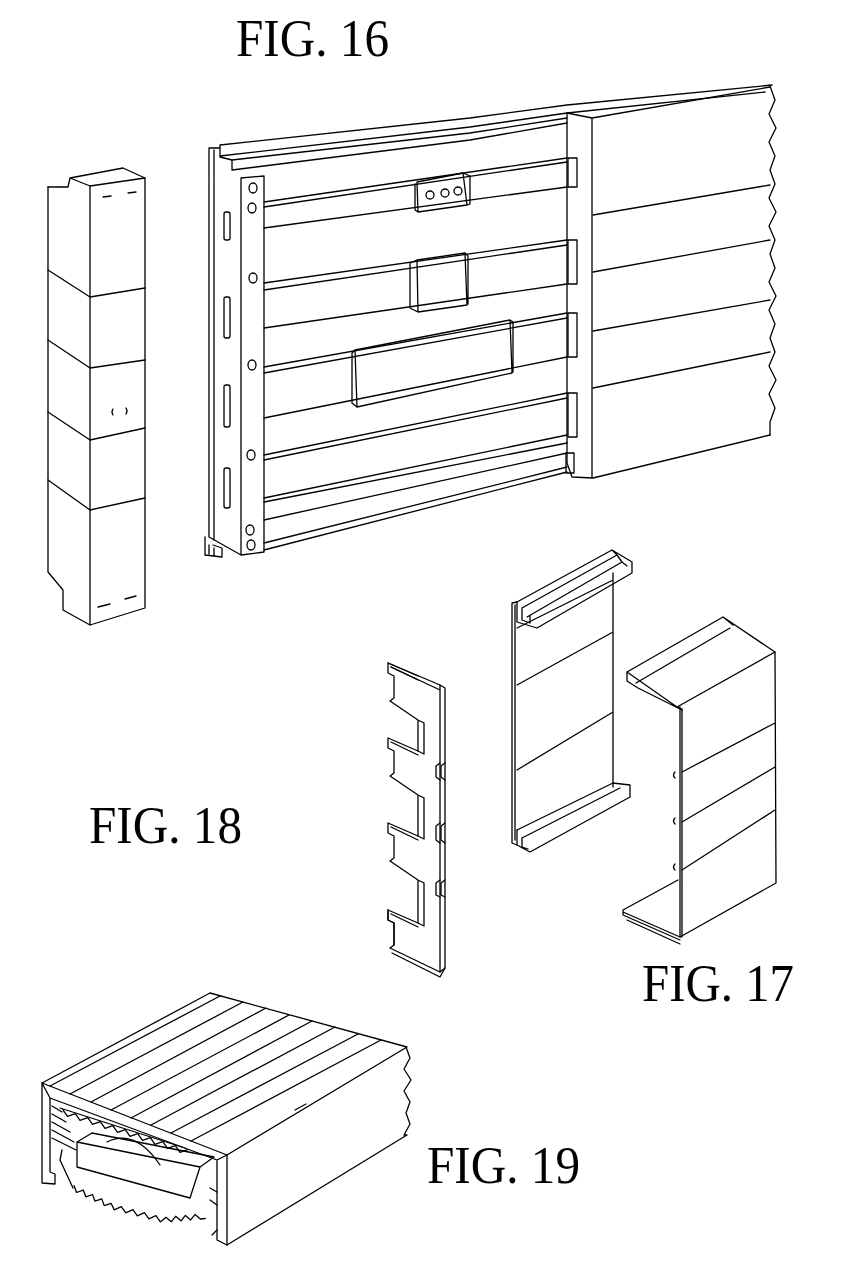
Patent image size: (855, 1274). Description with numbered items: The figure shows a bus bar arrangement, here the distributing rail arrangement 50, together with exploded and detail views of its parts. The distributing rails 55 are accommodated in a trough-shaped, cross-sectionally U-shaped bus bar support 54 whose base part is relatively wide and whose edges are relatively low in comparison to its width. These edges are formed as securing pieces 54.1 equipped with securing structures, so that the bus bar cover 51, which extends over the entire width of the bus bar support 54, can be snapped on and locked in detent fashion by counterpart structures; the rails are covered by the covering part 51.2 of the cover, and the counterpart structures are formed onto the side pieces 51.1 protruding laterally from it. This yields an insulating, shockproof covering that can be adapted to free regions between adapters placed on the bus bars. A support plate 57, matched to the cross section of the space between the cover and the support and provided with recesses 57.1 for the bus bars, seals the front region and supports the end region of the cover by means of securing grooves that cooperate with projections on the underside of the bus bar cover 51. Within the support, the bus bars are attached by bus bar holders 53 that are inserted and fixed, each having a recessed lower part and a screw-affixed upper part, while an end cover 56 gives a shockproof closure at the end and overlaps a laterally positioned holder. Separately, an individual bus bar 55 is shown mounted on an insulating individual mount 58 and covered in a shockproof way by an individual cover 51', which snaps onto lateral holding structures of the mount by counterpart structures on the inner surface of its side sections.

In FIG. 16, the distributing rail arrangement 50 is at (268, 595).
In FIG. 16, the bus bar cover 51 is at (671, 299).
In FIG. 17, the bus bar cover 51 is at (731, 766).
In FIG. 19, the individual cover 51' is at (226, 1117).
In FIG. 17, the side pieces 51.1 is at (668, 655).
In FIG. 17, the covering part 51.2 is at (688, 838).
In FIG. 16, the bus bar holders 53 is at (212, 522).
In FIG. 16, the bus bar support 54 is at (247, 144).
In FIG. 17, the bus bar support 54 is at (506, 643).
In FIG. 17, the securing pieces 54.1 is at (622, 552).
In FIG. 16, the distributing rails 55 is at (410, 460).
In FIG. 19, the distributing rails 55 is at (140, 1178).
In FIG. 16, the end cover 56 is at (115, 625).
In FIG. 16, the support plate 57 is at (577, 450).
In FIG. 18, the support plate 57 is at (378, 772).
In FIG. 18, the recesses 57.1 is at (395, 890).
In FIG. 19, the individual mount 58 is at (73, 1187).